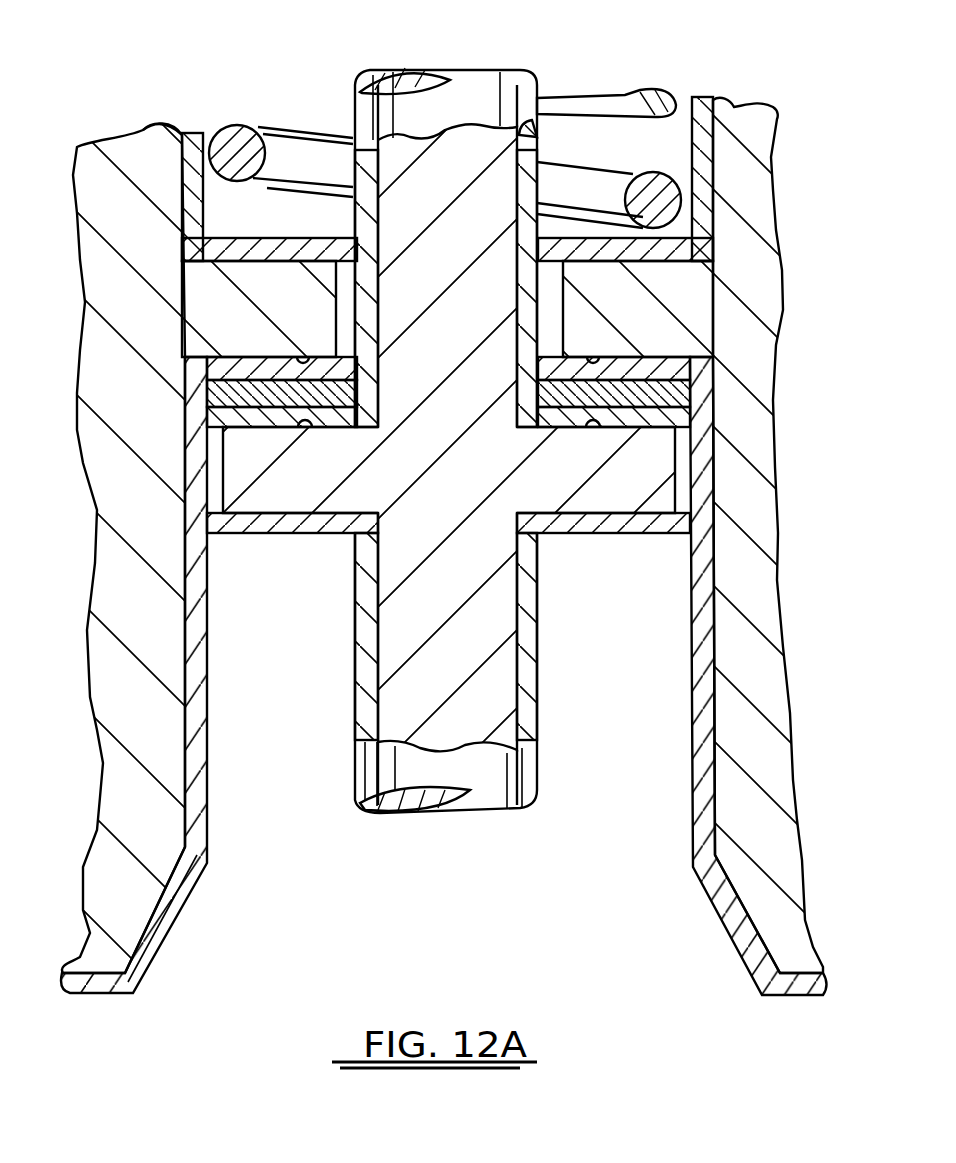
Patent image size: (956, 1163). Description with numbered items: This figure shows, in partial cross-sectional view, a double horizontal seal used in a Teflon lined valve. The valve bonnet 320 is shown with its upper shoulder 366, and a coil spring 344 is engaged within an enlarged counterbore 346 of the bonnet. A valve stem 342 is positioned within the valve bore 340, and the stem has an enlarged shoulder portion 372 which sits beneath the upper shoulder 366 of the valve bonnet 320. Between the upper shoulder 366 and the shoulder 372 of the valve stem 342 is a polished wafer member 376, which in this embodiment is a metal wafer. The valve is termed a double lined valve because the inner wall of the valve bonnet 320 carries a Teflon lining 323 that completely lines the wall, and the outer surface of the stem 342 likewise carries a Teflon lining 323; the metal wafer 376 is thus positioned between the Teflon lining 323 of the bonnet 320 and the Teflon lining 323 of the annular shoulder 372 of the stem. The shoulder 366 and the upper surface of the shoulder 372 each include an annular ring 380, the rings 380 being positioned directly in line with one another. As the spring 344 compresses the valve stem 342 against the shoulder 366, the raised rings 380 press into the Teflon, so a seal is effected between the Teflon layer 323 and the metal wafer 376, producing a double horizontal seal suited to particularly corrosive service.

The valve bonnet 320 is at (732, 158).
The Teflon lining 323 is at (140, 137).
The valve bore 340 is at (747, 600).
The valve stem 342 is at (470, 103).
The coil spring 344 is at (590, 183).
The enlarged counterbore 346 is at (657, 140).
The upper shoulder 366 is at (700, 300).
The enlarged shoulder portion 372 is at (637, 463).
The polished wafer member 376 is at (697, 357).
The annular ring 380 is at (302, 355).